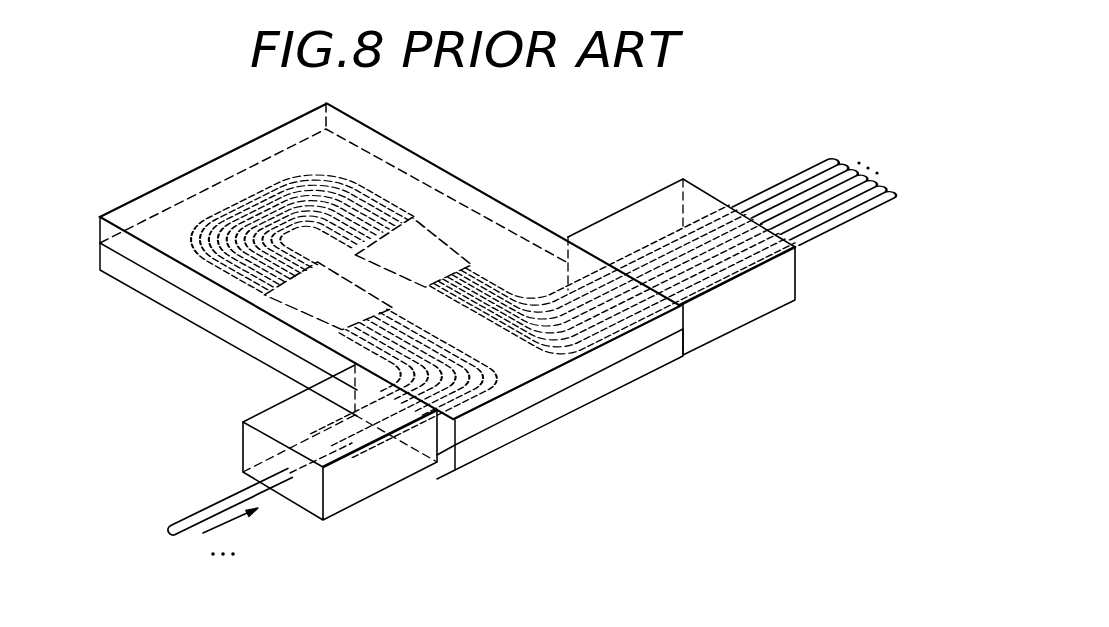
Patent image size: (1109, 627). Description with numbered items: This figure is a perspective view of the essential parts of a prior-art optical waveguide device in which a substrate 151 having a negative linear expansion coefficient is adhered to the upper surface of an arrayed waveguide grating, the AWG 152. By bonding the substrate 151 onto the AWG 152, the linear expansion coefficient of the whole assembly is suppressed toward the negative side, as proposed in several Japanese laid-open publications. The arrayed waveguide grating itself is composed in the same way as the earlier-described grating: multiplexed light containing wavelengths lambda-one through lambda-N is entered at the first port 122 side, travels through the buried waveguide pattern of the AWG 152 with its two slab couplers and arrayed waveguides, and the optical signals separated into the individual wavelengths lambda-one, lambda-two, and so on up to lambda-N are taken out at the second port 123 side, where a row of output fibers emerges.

The substrate having a negative linear expansion coefficient 151 is at (437, 168).
The AWG 152 is at (602, 388).
The first port 122 is at (382, 479).
The second port 123 is at (725, 290).